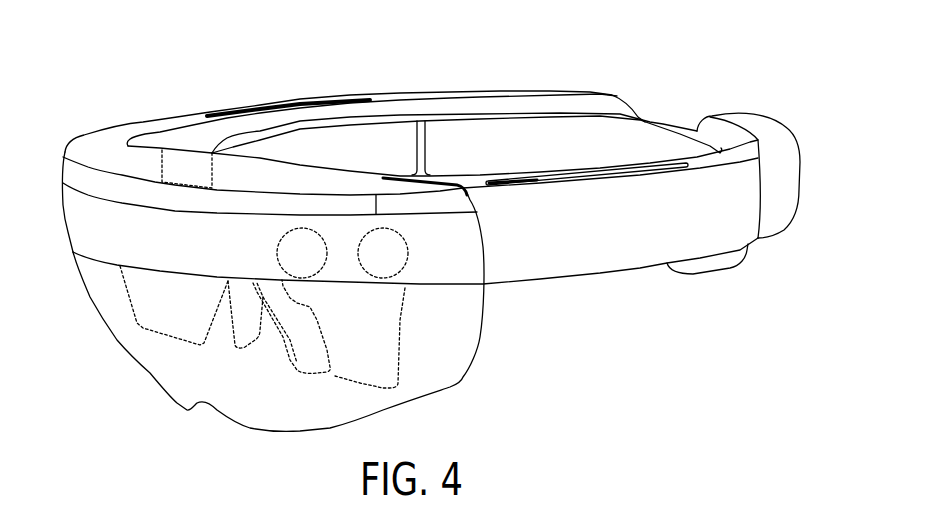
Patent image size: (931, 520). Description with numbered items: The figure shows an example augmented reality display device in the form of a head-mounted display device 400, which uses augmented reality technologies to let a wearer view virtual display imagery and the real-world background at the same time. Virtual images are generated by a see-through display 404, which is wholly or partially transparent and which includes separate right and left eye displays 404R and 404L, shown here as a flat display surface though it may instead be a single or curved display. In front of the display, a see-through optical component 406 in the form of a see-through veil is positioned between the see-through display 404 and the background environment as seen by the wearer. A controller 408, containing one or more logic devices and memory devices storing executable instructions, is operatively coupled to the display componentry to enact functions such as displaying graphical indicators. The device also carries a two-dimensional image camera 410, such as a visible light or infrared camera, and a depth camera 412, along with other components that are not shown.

The head-mounted display device 400 is at (730, 55).
The see-through display 404 is at (402, 317).
The left eye display 404L is at (383, 378).
The right eye display 404R is at (206, 333).
The see-through optical component 406 is at (476, 366).
The controller 408 is at (206, 178).
The two-dimensional image camera 410 is at (319, 264).
The depth camera 412 is at (402, 264).